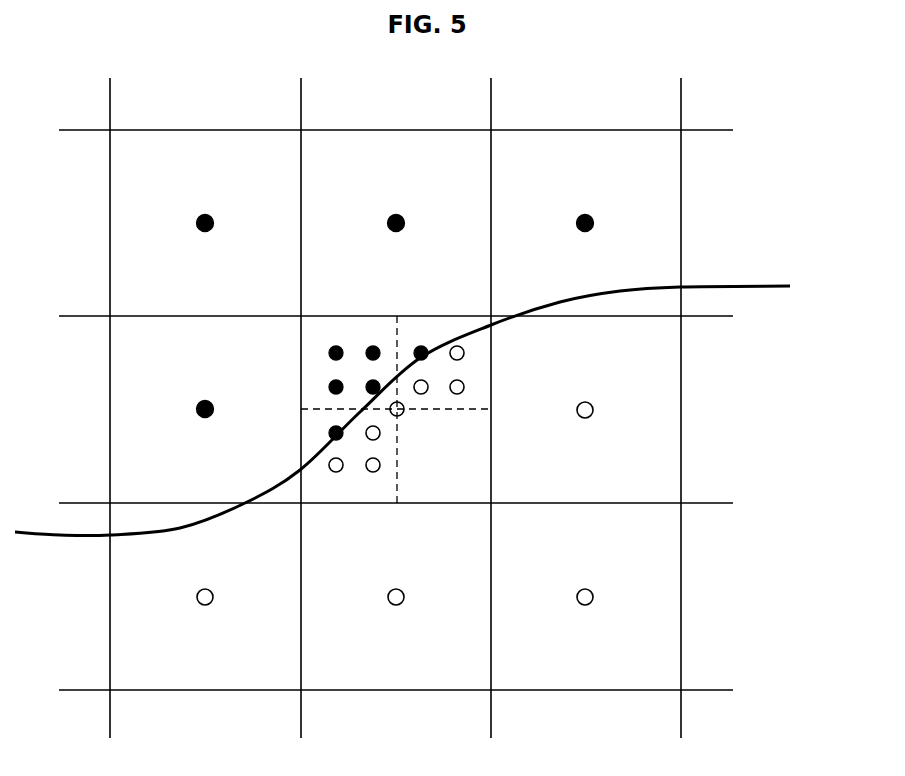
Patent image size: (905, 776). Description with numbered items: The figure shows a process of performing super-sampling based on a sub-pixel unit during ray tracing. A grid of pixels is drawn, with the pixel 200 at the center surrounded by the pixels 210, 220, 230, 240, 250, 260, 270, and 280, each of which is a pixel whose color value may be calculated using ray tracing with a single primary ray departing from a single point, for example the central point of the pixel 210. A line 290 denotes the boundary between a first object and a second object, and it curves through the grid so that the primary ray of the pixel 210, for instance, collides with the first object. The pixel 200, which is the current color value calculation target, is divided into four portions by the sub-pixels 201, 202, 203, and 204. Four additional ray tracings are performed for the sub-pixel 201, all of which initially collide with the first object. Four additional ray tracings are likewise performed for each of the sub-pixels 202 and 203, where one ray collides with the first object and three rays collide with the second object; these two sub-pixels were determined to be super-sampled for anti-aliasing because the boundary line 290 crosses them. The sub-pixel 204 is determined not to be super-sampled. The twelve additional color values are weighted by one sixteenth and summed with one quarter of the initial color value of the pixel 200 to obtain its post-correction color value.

The pixel 200 is at (421, 424).
The sub-pixel 201 is at (354, 357).
The sub-pixel 202 is at (439, 356).
The sub-pixel 203 is at (354, 463).
The sub-pixel 204 is at (444, 456).
The pixel 210 is at (205, 246).
The pixel 220 is at (396, 246).
The pixel 230 is at (585, 246).
The pixel 240 is at (205, 432).
The pixel 250 is at (585, 432).
The pixel 260 is at (205, 619).
The pixel 270 is at (396, 619).
The pixel 280 is at (585, 619).
The line 290 is at (713, 286).